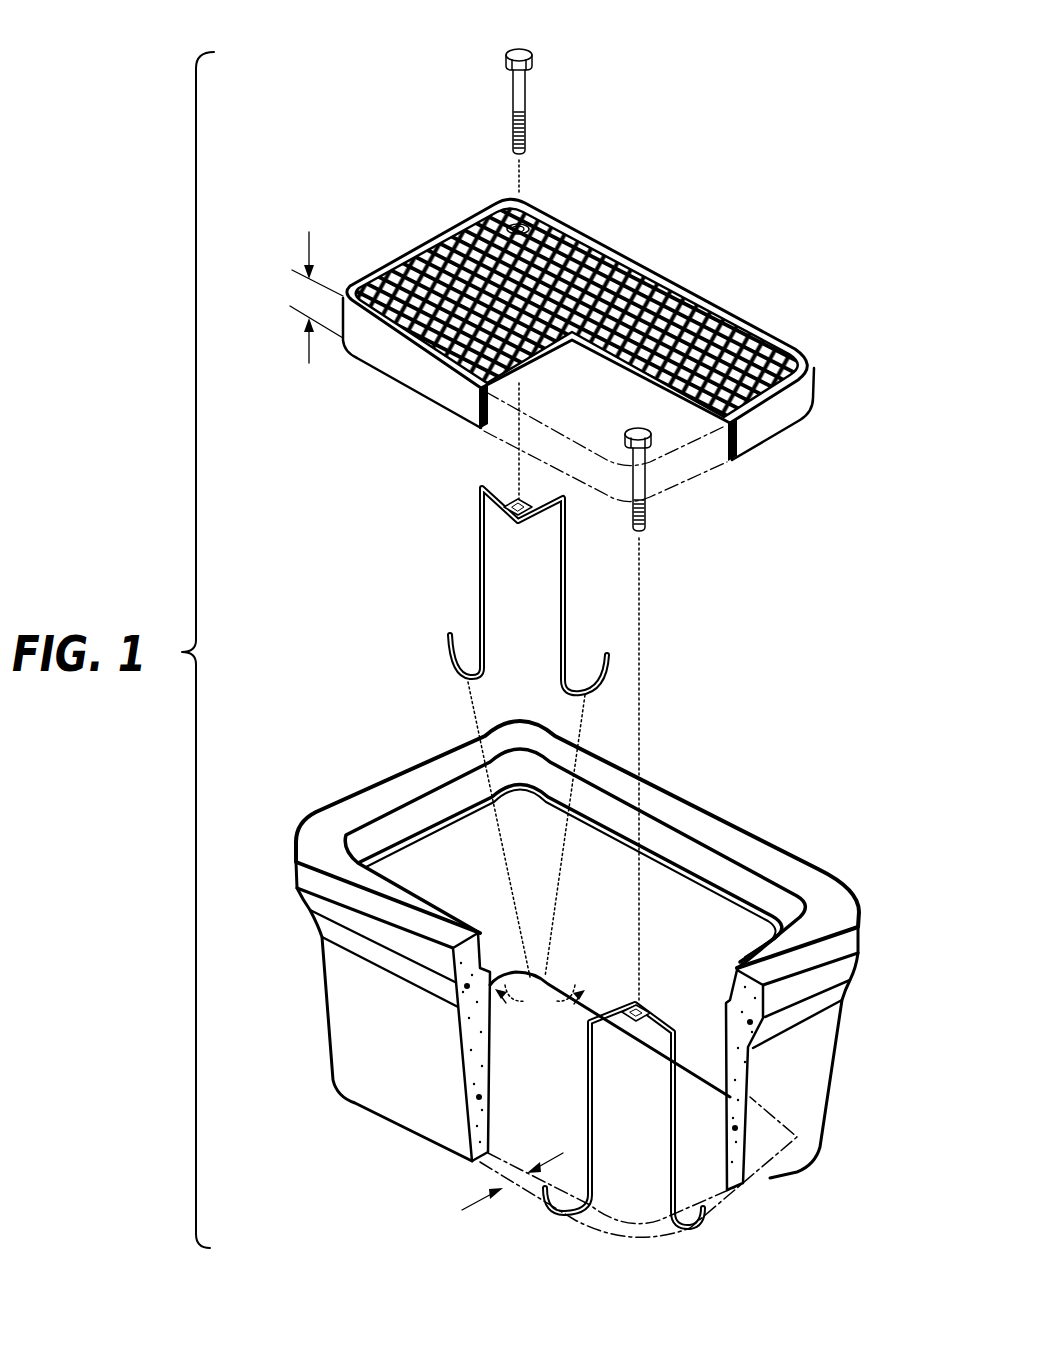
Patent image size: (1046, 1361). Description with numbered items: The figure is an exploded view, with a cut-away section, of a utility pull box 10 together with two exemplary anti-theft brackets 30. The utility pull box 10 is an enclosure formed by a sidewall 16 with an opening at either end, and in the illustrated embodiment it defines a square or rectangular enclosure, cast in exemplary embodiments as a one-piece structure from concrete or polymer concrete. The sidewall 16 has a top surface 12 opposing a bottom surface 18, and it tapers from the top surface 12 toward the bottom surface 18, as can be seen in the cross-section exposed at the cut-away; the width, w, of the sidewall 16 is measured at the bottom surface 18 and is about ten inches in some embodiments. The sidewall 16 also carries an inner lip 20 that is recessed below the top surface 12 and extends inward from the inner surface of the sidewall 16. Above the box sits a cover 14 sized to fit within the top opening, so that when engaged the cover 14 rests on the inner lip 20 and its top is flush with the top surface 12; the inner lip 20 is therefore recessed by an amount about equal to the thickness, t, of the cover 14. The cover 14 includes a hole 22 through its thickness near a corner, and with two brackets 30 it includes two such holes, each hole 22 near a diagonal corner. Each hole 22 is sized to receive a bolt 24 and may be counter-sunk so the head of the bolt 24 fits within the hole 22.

The utility pull box 10 is at (721, 100).
The top surface 12 is at (793, 850).
The cover 14 is at (752, 320).
The sidewall 16 is at (698, 913).
The bottom surface 18 is at (447, 1150).
The inner lip 20 is at (653, 843).
The hole 22 is at (530, 193).
The bolt 24 is at (527, 86).
The anti-theft bracket 30 is at (477, 593).